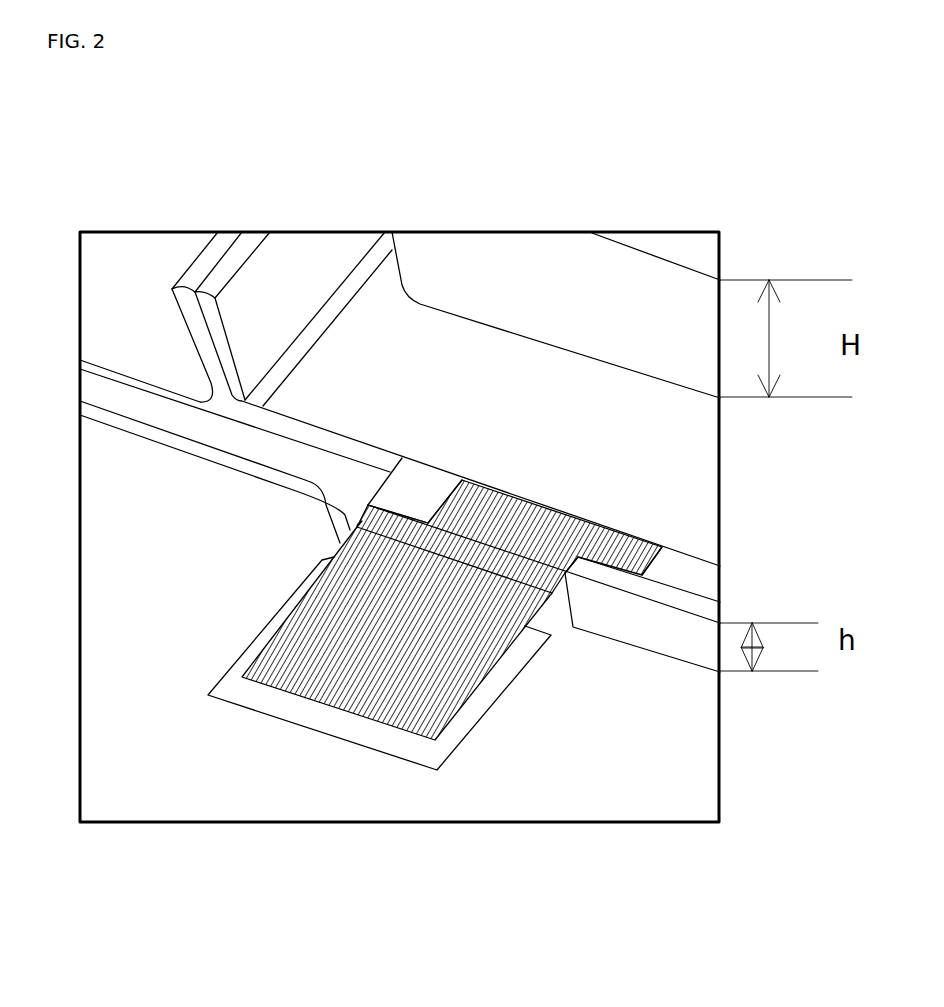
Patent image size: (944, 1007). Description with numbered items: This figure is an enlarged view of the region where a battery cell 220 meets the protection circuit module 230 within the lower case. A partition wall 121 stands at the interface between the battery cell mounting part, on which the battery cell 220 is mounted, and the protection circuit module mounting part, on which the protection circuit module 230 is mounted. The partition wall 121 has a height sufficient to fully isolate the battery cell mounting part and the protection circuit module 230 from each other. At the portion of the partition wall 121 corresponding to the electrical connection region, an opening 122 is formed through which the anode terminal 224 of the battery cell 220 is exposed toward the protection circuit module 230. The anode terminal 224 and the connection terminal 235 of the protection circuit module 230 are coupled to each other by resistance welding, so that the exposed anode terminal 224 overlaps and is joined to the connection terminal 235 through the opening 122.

The battery cell 220 is at (630, 281).
The protection circuit module 230 is at (211, 774).
The anode terminal 224 is at (388, 658).
The connection terminal 235 is at (297, 707).
The partition wall 121 is at (693, 642).
The opening 122 is at (561, 602).